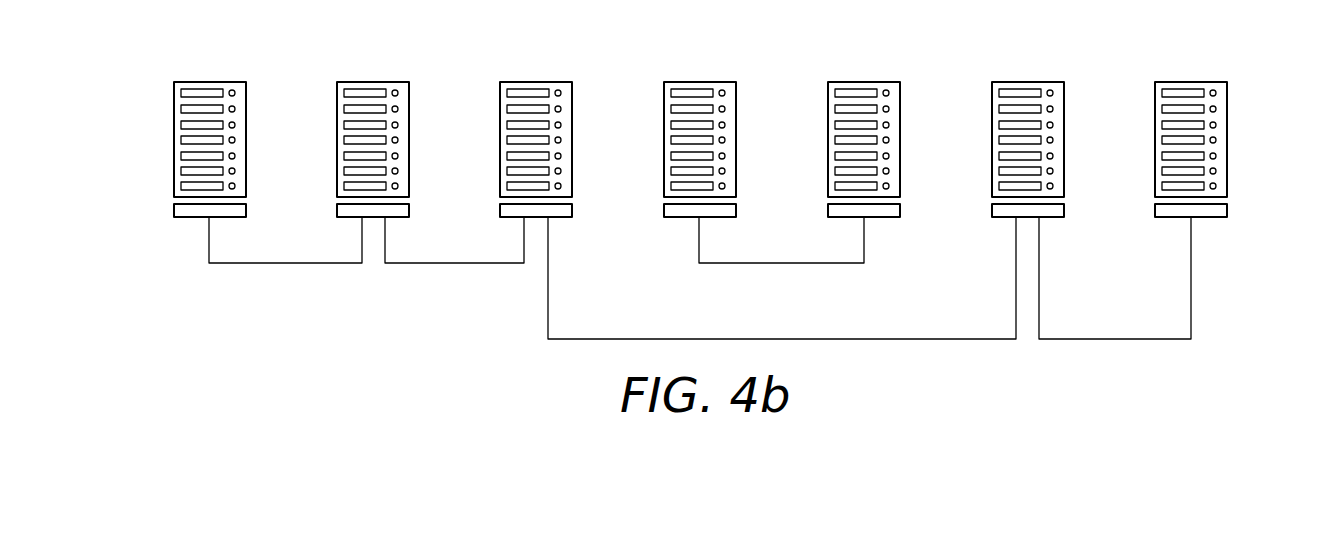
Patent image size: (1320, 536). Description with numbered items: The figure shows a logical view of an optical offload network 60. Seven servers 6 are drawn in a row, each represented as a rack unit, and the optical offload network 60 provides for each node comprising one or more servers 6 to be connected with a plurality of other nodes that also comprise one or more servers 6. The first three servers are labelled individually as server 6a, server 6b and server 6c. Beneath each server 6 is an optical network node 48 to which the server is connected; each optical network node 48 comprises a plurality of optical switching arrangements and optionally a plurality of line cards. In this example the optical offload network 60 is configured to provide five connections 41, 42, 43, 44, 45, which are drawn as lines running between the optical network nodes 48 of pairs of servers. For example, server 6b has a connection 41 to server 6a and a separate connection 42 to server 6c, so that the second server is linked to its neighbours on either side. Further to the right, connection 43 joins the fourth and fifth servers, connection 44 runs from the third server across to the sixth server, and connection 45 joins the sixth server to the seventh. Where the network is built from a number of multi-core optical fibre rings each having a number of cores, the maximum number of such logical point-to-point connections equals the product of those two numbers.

The optical offload network 60 is at (160, 54).
The server 6 is at (226, 82).
The server 6a is at (174, 100).
The server 6b is at (337, 100).
The server 6c is at (500, 100).
The optical network node 48 is at (246, 211).
The connection 41 is at (286, 264).
The connection 42 is at (455, 264).
The connection 43 is at (783, 264).
The connection 44 is at (896, 340).
The connection 45 is at (1116, 340).